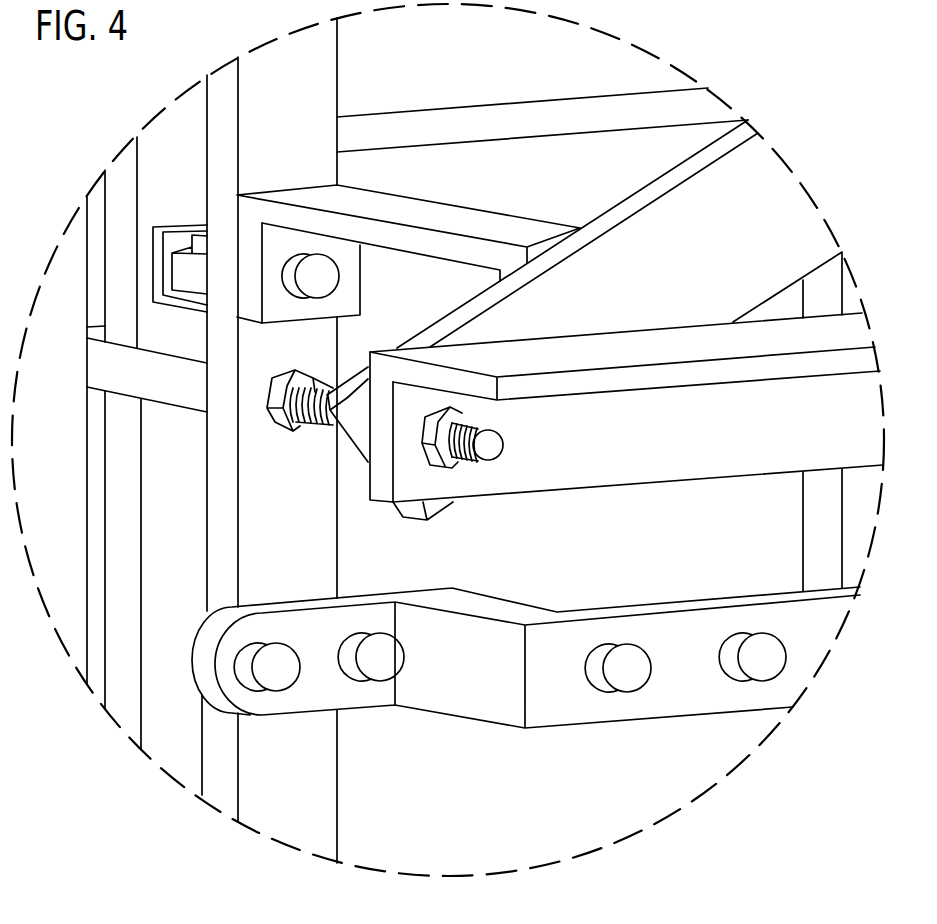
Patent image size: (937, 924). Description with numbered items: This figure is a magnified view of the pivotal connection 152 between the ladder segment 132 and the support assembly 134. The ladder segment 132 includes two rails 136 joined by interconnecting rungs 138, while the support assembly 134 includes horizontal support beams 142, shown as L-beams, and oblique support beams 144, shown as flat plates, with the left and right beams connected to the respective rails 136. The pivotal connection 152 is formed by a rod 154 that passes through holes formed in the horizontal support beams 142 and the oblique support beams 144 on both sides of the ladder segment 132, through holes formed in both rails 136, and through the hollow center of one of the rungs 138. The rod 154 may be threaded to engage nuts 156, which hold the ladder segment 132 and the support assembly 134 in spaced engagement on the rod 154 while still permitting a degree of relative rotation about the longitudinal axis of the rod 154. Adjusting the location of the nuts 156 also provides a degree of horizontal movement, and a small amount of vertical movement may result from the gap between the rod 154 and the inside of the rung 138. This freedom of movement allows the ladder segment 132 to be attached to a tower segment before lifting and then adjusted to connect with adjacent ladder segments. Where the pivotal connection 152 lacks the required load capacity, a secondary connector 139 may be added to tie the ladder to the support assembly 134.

The ladder segment 132 is at (180, 137).
The support assembly 134 is at (661, 517).
The rail 136 is at (307, 116).
The rung 138 is at (174, 385).
The secondary connector 139 is at (437, 220).
The horizontal support beam 142 is at (702, 446).
The oblique support beam 144 is at (688, 278).
The pivotal connection 152 is at (307, 358).
The rod 154 is at (491, 447).
The nut 156 is at (283, 423).